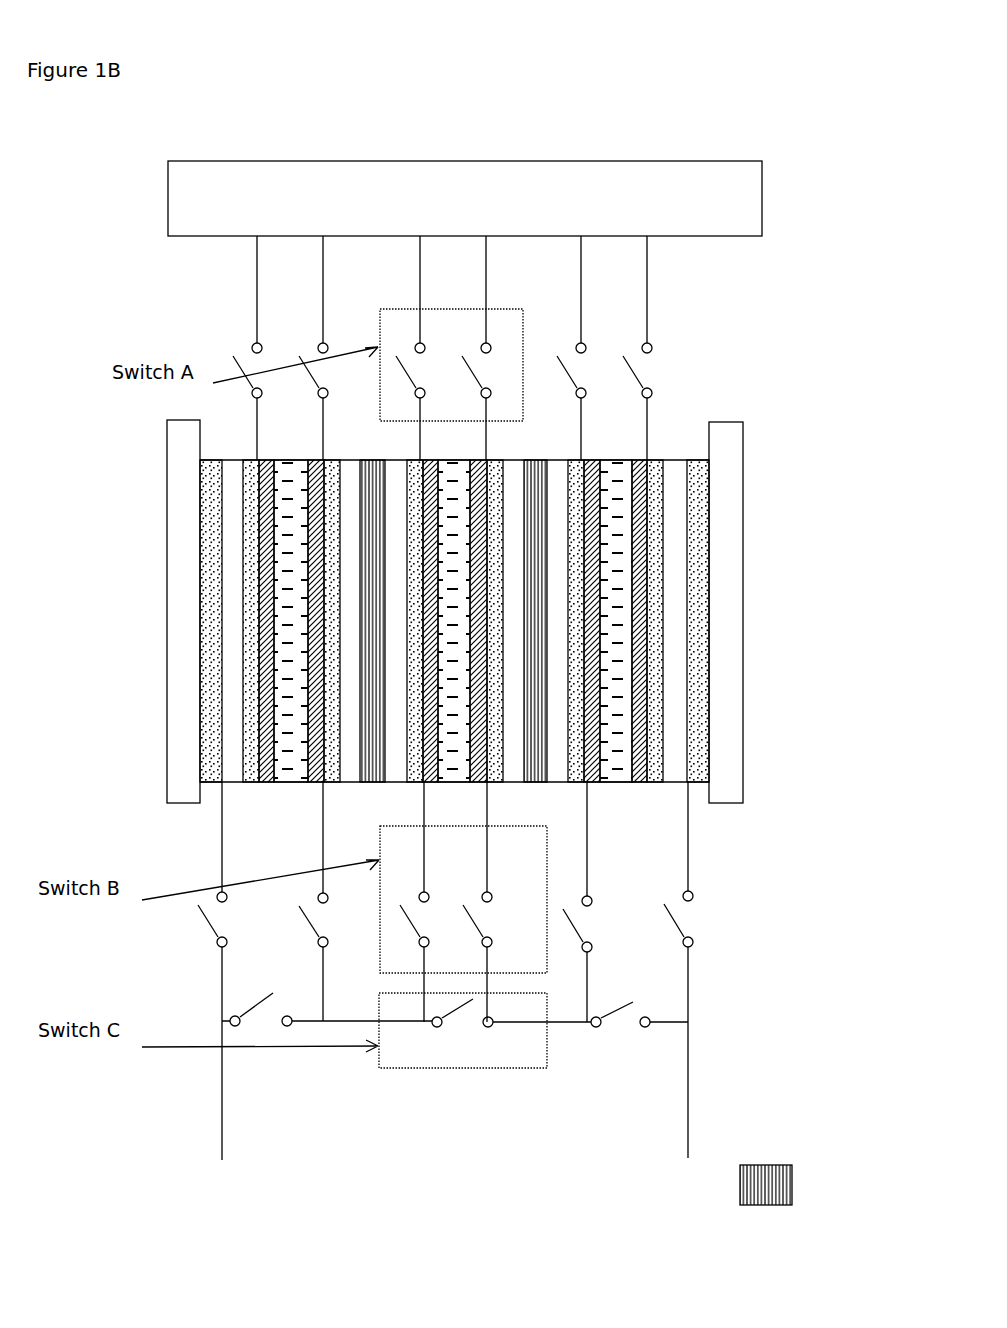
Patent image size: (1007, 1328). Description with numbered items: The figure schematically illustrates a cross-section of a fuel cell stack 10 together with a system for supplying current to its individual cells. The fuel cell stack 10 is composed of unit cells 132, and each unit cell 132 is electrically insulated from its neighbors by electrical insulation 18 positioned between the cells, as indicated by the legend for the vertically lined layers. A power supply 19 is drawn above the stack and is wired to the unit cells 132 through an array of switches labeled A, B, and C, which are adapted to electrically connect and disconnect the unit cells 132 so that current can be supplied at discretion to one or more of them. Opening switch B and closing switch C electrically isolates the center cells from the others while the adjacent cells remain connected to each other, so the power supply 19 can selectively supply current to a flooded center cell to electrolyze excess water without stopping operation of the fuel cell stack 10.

The fuel cell stack 10 is at (862, 93).
The power supply 19 is at (741, 241).
The unit cells 132 is at (640, 800).
The electrical insulation 18 is at (596, 832).